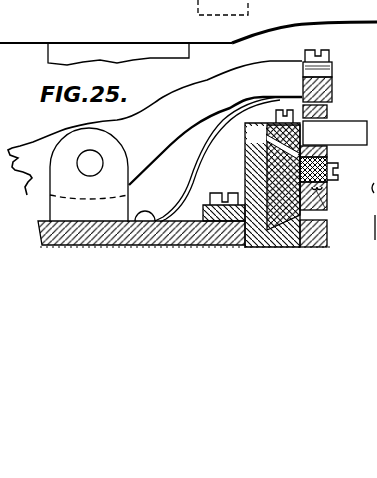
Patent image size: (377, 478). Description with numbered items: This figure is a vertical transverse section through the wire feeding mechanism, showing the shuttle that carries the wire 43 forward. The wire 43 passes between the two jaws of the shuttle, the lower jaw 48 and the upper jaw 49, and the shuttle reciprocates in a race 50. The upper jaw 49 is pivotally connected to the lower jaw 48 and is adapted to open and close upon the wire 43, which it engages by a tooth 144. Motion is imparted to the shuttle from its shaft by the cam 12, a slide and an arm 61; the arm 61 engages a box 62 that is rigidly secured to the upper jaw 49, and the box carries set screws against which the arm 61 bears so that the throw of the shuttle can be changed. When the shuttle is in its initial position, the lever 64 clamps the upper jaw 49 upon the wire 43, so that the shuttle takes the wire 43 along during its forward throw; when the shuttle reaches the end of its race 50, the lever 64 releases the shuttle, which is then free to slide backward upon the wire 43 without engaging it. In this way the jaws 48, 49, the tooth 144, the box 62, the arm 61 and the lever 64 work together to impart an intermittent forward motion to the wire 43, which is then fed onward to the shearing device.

The shuttle-driving cam 12 is at (188, 32).
The race 50 is at (272, 178).
The lever 64 is at (332, 86).
The arm 61 is at (335, 133).
The box 62 is at (315, 151).
The upper jaw 49 is at (330, 163).
The lower jaw 48 is at (327, 206).
The tooth 144 is at (324, 187).
The wire 43 is at (323, 213).